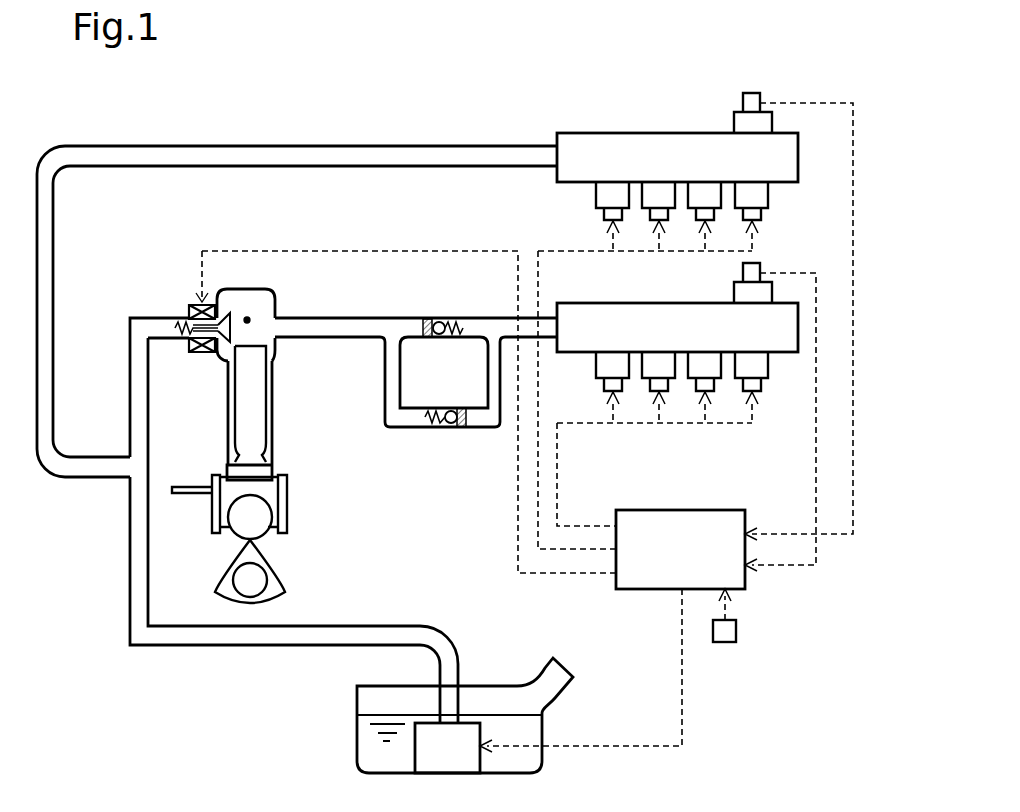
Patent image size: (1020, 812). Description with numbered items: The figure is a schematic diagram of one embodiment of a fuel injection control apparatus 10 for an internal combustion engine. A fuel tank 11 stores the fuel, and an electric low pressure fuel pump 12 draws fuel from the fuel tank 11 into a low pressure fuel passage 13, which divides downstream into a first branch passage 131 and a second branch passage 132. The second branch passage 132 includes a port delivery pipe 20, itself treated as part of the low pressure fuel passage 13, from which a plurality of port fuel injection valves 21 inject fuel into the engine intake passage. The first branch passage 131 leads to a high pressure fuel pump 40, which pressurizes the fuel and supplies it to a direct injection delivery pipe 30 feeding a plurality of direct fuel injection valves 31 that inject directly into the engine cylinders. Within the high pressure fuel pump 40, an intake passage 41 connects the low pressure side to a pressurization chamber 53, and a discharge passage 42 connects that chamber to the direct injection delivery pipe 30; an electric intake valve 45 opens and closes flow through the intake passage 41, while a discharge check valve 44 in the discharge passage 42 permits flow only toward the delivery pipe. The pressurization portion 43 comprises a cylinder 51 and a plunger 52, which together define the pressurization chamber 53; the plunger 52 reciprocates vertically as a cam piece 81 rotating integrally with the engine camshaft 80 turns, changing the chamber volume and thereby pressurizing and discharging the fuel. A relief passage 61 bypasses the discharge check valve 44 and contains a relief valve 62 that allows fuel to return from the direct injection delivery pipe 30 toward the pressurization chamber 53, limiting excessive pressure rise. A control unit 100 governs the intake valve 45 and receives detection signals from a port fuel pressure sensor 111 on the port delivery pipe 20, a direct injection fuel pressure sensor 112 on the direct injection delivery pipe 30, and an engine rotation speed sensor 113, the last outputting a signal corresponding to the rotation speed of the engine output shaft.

The fuel injection control apparatus 10 is at (141, 119).
The fuel tank 11 is at (357, 693).
The low pressure fuel pump 12 is at (410, 763).
The low pressure fuel passage 13 is at (130, 609).
The first branch passage 131 is at (130, 385).
The second branch passage 132 is at (128, 167).
The port delivery pipe 20 is at (578, 133).
The port fuel injection valves 21 is at (656, 187).
The direct injection delivery pipe 30 is at (785, 354).
The direct fuel injection valves 31 is at (656, 357).
The high pressure fuel pump 40 is at (147, 278).
The intake passage 41 is at (187, 340).
The discharge passage 42 is at (356, 318).
The pressurization portion 43 is at (289, 422).
The discharge check valve 44 is at (441, 318).
The intake valve 45 is at (193, 305).
The cylinder 51 is at (247, 289).
The plunger 52 is at (240, 432).
The pressurization chamber 53 is at (250, 320).
The relief passage 61 is at (478, 408).
The relief valve 62 is at (466, 451).
The camshaft 80 is at (240, 582).
The cam piece 81 is at (228, 559).
The control unit 100 is at (680, 510).
The port fuel pressure sensor 111 is at (734, 108).
The direct injection fuel pressure sensor 112 is at (750, 298).
The engine rotation speed sensor 113 is at (725, 642).